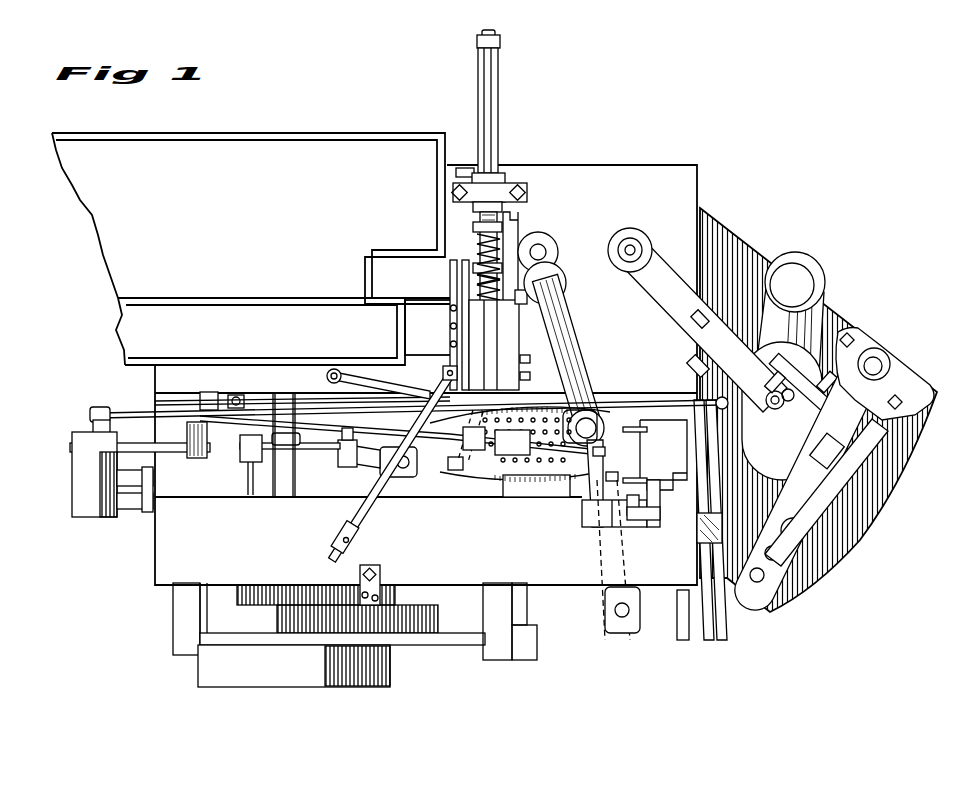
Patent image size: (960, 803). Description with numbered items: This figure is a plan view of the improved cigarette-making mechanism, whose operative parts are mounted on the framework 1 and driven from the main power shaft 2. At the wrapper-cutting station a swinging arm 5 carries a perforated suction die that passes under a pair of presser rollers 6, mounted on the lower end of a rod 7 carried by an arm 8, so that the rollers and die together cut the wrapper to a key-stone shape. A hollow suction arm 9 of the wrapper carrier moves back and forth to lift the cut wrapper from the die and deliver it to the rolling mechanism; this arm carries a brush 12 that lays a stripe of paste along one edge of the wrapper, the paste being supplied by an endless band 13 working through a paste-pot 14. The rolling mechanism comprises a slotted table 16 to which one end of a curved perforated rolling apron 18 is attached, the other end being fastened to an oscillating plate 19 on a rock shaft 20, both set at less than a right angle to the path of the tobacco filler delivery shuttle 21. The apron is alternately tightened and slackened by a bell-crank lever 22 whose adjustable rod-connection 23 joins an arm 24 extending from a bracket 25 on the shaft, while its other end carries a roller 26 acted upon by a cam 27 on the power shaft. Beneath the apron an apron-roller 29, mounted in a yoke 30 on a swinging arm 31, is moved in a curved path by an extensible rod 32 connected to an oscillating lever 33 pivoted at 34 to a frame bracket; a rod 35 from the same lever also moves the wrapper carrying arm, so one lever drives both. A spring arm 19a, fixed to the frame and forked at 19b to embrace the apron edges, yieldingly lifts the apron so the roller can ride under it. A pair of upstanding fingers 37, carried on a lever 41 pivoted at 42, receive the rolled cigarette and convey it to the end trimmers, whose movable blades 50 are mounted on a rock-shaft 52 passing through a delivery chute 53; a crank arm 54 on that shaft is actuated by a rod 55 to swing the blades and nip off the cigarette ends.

The framework 1 is at (594, 140).
The main power shaft 2 is at (295, 647).
The swinging arm 5 is at (800, 314).
The presser rollers 6 is at (882, 378).
The rod 7 is at (842, 438).
The arm 8 is at (795, 485).
The hollow arm 9 is at (778, 412).
The brush 12 is at (794, 366).
The endless band 13 is at (706, 483).
The paste-pot 14 is at (720, 522).
The slotted table 16 is at (530, 404).
The perforated rolling apron 18 is at (487, 462).
The oscillating plate 19 is at (417, 436).
The spring arm 19a is at (432, 396).
The forked end 19b is at (455, 470).
The rock shaft 20 is at (370, 506).
The tobacco filler delivery shuttle 21 is at (487, 356).
The bell-crank lever 22 is at (243, 452).
The adjustable rod-connection 23 is at (340, 462).
The arm 24 is at (385, 474).
The bracket 25 is at (412, 460).
The roller 26 is at (265, 437).
The cam 27 is at (313, 444).
The apron-roller 29 is at (602, 470).
The yoke 30 is at (592, 470).
The swinging arm 31 is at (577, 385).
The extensible rod 32 is at (142, 413).
The oscillating lever 33 is at (131, 447).
The pivot 34 is at (93, 512).
The rod 35 is at (287, 396).
The upstanding fingers 37 is at (602, 451).
The lever 41 is at (600, 516).
The pivot 42 is at (615, 610).
The movable blades 50 is at (631, 427).
The rock-shaft 52 is at (660, 515).
The delivery chute 53 is at (663, 455).
The crank arm 54 is at (633, 516).
The rod 55 is at (613, 506).